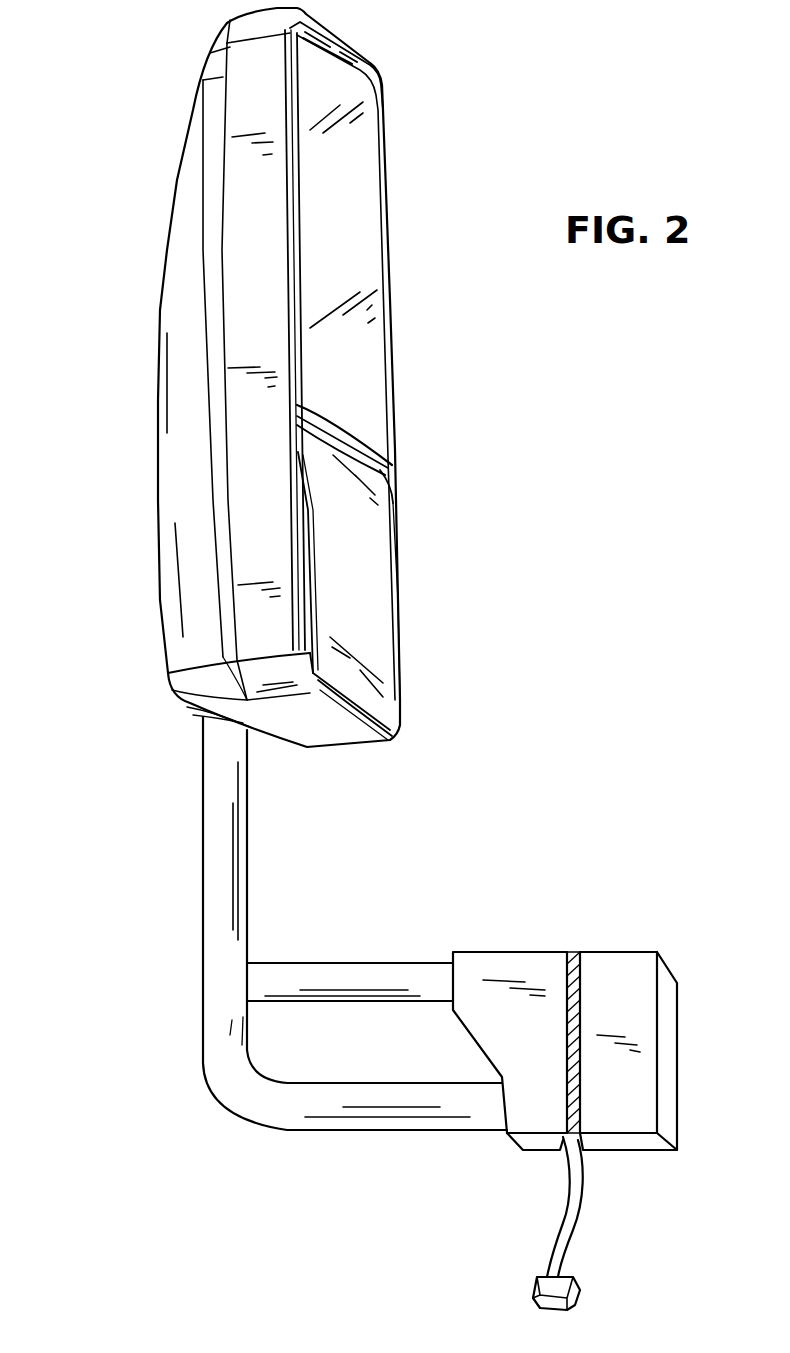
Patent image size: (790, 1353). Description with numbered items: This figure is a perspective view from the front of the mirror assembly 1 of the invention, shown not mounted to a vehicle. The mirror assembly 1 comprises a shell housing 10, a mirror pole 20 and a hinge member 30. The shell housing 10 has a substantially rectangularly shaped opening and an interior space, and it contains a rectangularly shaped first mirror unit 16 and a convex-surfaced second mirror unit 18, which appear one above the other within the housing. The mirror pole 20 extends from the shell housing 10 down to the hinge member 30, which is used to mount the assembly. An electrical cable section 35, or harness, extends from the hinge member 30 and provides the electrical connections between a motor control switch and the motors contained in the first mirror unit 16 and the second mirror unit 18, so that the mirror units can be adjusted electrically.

The mirror assembly 1 is at (450, 175).
The shell housing 10 is at (240, 238).
The first mirror unit 16 is at (383, 471).
The second mirror unit 18 is at (390, 732).
The mirror pole 20 is at (203, 902).
The hinge member 30 is at (570, 935).
The electrical cable section 35 is at (563, 1222).